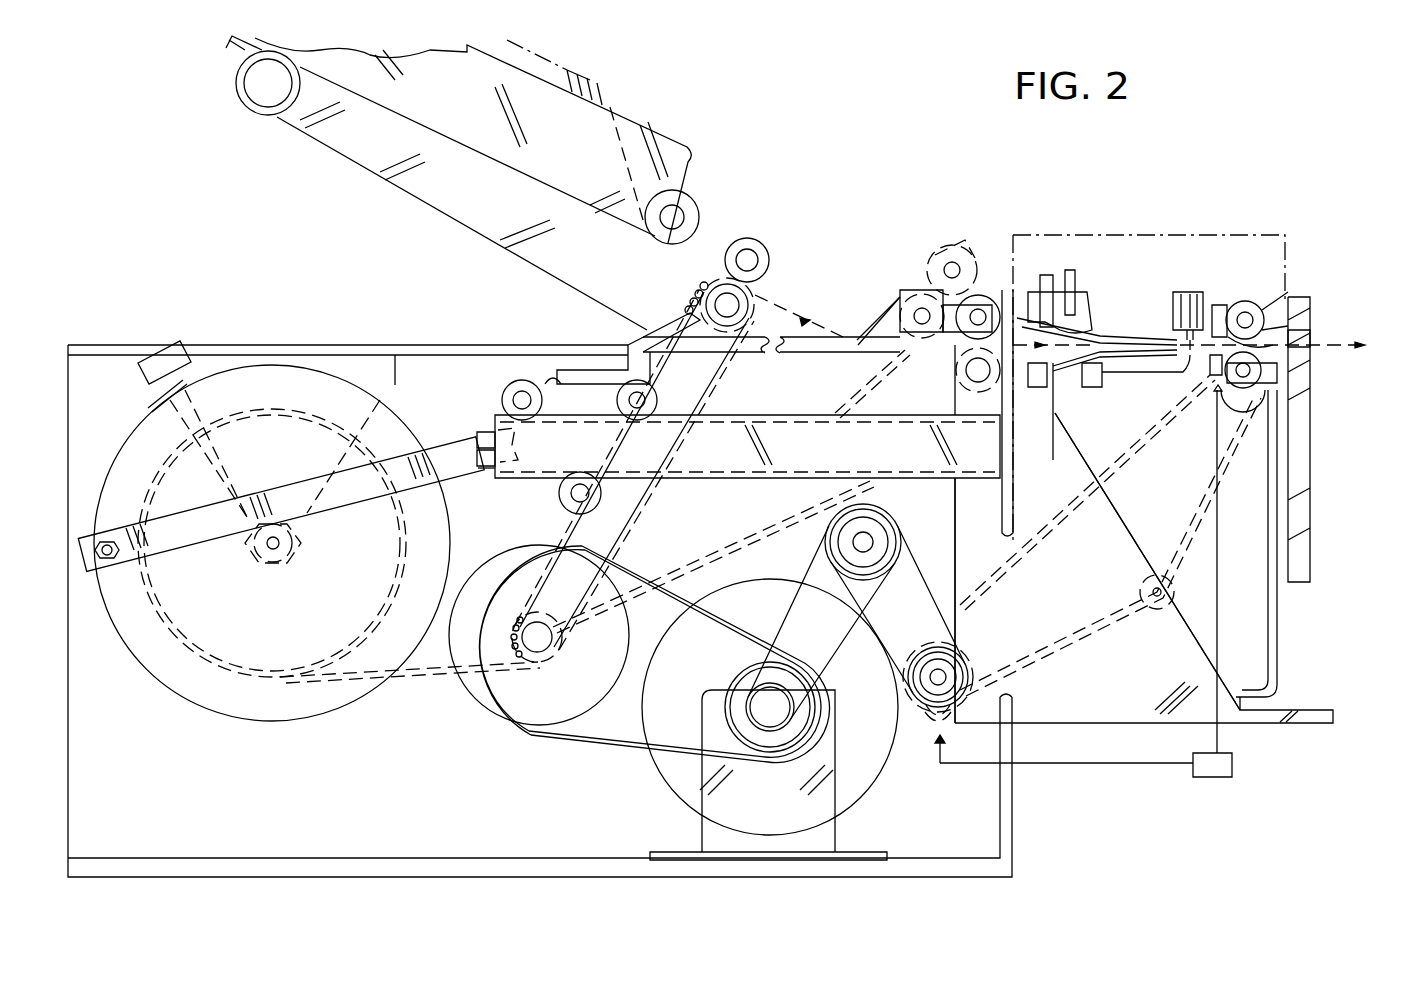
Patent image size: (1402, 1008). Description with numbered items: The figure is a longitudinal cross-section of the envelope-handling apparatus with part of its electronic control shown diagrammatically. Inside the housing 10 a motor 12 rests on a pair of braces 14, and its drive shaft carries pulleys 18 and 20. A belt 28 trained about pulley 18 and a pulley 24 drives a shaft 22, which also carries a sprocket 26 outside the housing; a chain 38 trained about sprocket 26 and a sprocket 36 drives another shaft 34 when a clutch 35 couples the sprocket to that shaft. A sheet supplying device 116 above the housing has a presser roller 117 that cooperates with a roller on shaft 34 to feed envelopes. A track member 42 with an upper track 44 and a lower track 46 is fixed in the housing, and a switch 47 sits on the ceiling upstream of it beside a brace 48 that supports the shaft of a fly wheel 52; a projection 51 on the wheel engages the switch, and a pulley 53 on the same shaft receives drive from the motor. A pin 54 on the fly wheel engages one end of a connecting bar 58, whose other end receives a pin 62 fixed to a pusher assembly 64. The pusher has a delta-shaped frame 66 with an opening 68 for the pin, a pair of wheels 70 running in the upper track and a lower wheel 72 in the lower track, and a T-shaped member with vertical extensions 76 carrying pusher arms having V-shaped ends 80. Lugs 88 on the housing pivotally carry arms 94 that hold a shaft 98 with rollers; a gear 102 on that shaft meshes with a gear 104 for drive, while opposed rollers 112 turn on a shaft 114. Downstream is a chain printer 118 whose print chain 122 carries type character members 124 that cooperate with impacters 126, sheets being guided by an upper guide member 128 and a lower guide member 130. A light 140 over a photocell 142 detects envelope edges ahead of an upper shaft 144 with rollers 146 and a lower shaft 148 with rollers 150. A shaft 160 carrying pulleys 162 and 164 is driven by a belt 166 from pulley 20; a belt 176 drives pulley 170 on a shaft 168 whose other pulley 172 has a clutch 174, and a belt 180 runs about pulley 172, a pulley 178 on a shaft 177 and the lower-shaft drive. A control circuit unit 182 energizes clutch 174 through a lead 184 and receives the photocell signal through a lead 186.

The housing 10 is at (1012, 810).
The motor 12 is at (662, 770).
The braces 14 is at (706, 832).
The pulley 18 is at (810, 713).
The pulley 20 is at (776, 724).
The shaft 22 is at (531, 656).
The pulley 24 is at (468, 680).
The sprocket 26 is at (548, 656).
The belt 28 is at (590, 738).
The shaft 34 is at (738, 305).
The clutch 35 is at (827, 317).
The sprocket 36 is at (698, 292).
The chain 38 is at (566, 531).
The track member 42 is at (816, 463).
The upper track 44 is at (882, 414).
The lower track 46 is at (930, 470).
The switch 47 is at (145, 378).
The brace 48 is at (392, 358).
The projection 51 is at (186, 386).
The fly wheel 52 is at (212, 708).
The pulley 53 is at (360, 653).
The pin 54 is at (107, 542).
The connecting bar 58 is at (368, 498).
The pin 62 is at (482, 428).
The pusher assembly 64 is at (607, 347).
The frame 66 is at (570, 396).
The opening 68 is at (492, 474).
The wheels 70 is at (514, 392).
The lower wheel 72 is at (592, 508).
The vertical extensions 76 is at (636, 366).
The V-shaped end 80 is at (748, 355).
The lugs 88 is at (910, 290).
The arms 94 is at (1036, 290).
The shaft 98 is at (948, 265).
The gear 102 is at (978, 296).
The gear 104 is at (902, 300).
The rollers 112 is at (958, 385).
The shaft 114 is at (990, 376).
The sheet supplying device 116 is at (395, 210).
The presser roller 117 is at (752, 240).
The chain printer 118 is at (1165, 265).
The print chain 122 is at (1191, 290).
The type character members 124 is at (1178, 336).
The impacters 126 is at (1182, 365).
The upper guide member 128 is at (1105, 333).
The lower guide member 130 is at (1066, 376).
The light 140 is at (1242, 300).
The photocell 142 is at (1212, 376).
The upper shaft 144 is at (1262, 306).
The rollers 146 is at (1310, 310).
The lower shaft 148 is at (1262, 372).
The rollers 150 is at (1226, 420).
The shaft 160 is at (852, 542).
The pulley 162 is at (862, 506).
The pulley 164 is at (882, 528).
The belt 166 is at (806, 558).
The shaft 168 is at (946, 672).
The pulley 170 is at (966, 678).
The pulley 172 is at (915, 660).
The clutch 174 is at (926, 718).
The belt 176 is at (926, 598).
The shaft 177 is at (1163, 587).
The pulley 178 is at (1141, 592).
The belt 180 is at (1105, 650).
The control circuit unit 182 is at (1233, 768).
The lead 184 is at (1085, 763).
The lead 186 is at (1219, 600).